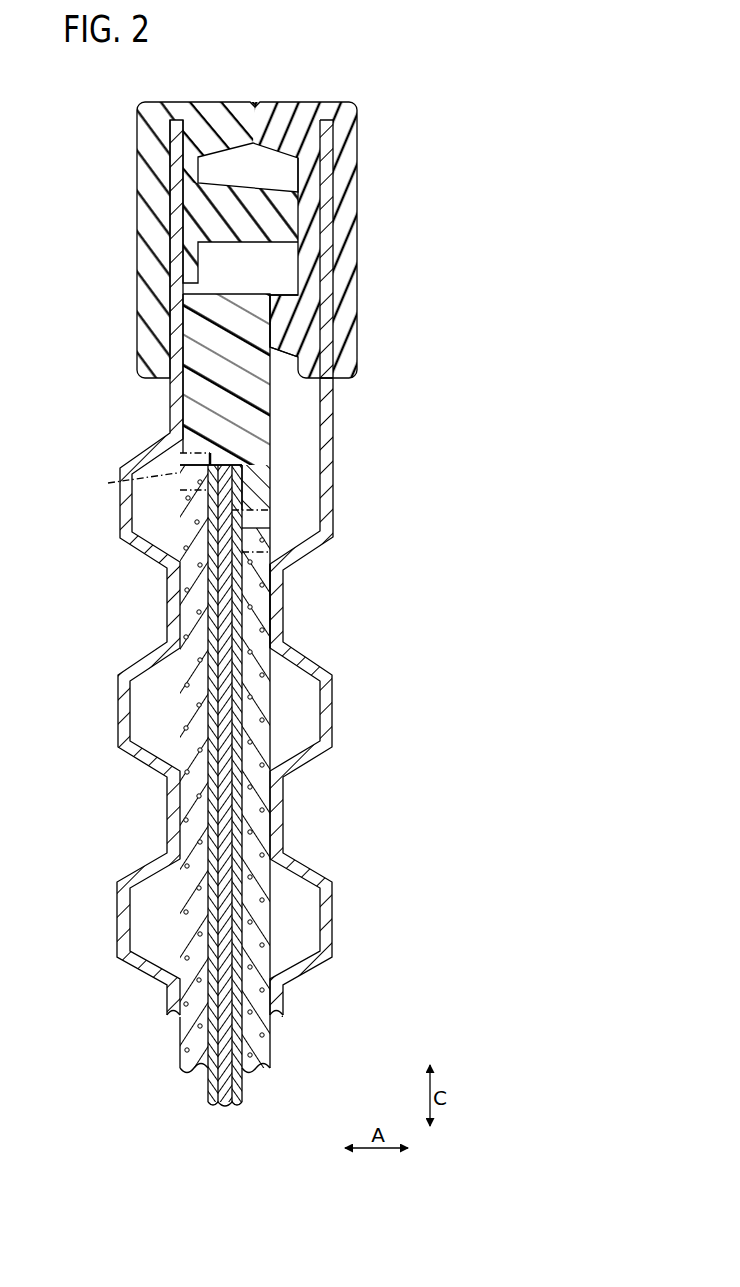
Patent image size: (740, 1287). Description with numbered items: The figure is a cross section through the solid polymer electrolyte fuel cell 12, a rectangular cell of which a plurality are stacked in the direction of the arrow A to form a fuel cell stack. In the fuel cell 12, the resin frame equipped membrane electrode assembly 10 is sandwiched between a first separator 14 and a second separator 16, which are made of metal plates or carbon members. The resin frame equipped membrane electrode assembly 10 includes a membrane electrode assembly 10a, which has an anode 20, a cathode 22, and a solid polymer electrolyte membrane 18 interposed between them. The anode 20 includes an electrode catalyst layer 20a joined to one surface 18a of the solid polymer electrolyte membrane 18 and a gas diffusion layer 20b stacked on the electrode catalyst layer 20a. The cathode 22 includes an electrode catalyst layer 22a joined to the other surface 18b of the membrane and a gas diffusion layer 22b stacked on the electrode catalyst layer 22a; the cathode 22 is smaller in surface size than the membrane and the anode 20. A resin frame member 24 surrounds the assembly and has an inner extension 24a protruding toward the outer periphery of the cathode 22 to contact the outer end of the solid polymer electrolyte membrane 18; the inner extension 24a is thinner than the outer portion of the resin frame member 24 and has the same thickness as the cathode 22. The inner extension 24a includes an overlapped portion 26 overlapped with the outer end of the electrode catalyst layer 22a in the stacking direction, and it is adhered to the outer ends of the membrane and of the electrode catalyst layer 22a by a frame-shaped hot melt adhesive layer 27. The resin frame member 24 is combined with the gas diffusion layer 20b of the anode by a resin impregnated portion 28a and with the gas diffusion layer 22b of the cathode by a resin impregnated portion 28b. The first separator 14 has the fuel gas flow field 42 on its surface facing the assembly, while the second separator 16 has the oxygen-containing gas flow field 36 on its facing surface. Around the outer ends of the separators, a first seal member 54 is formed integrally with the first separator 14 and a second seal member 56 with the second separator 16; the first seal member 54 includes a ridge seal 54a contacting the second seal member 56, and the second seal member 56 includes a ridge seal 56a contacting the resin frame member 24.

The solid polymer electrolyte fuel cell 12 is at (193, 87).
The first seal member 54 is at (136, 128).
The second seal member 56 is at (358, 125).
The ridge seal 54a is at (252, 223).
The ridge seal 56a is at (282, 320).
The resin frame member 24 is at (273, 293).
The inner extension 24a is at (243, 503).
The adhesive layer 27 is at (245, 483).
The overlapped portion 26 is at (257, 522).
The resin impregnated portion 28a is at (122, 483).
The resin impregnated portion 28b is at (298, 540).
The first separator 14 is at (124, 756).
The second separator 16 is at (325, 756).
The resin frame equipped membrane electrode assembly 10 is at (293, 531).
The membrane electrode assembly 10a is at (273, 679).
The solid polymer electrolyte membrane 18 is at (216, 1105).
The one surface 18a is at (207, 1042).
The surface 18b is at (232, 1035).
The anode 20 is at (90, 572).
The electrode catalyst layer 20a is at (207, 620).
The gas diffusion layer 20b is at (190, 585).
The cathode 22 is at (362, 572).
The electrode catalyst layer 22a is at (237, 620).
The gas diffusion layer 22b is at (262, 585).
The fuel gas flow field 42 is at (147, 705).
The oxygen-containing gas flow field 36 is at (300, 705).